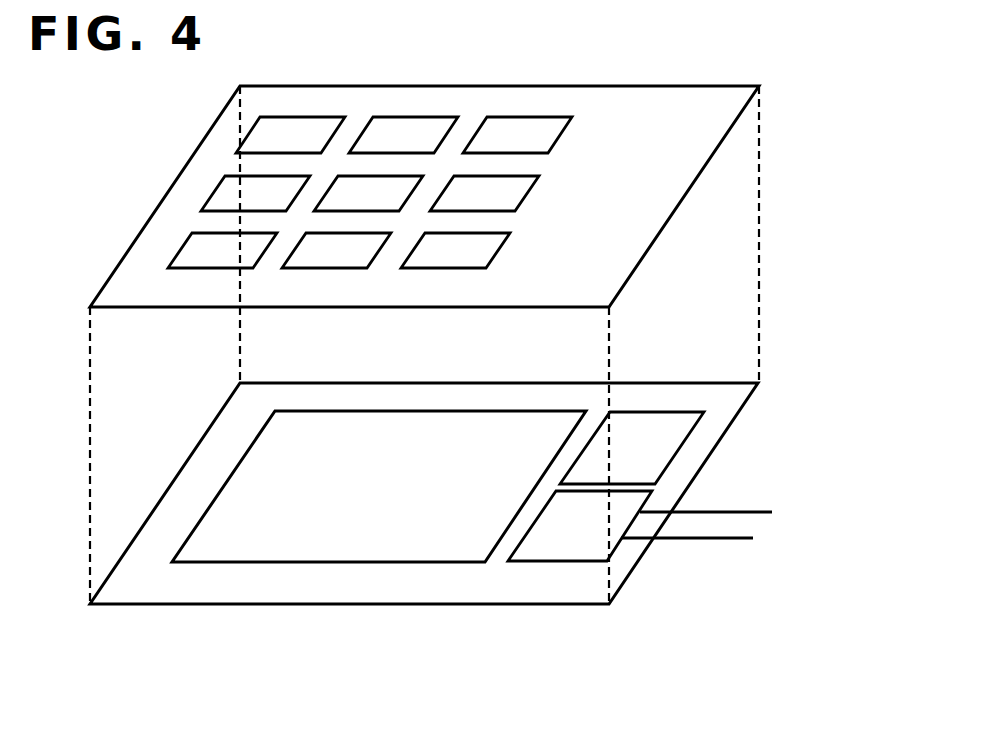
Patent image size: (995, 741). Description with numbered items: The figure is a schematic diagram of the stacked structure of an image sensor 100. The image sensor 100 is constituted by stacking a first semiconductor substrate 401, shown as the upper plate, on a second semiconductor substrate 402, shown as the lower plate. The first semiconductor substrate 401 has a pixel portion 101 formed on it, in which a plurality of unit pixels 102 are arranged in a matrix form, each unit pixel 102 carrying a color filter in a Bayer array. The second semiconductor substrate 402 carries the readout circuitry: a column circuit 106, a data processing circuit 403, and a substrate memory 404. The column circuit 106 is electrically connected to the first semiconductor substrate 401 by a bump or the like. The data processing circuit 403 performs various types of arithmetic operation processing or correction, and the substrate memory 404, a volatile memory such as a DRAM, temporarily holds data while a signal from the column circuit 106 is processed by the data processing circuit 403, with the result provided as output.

The image sensor 100 is at (783, 88).
The pixel portion 101 is at (173, 182).
The unit pixel 102 is at (288, 117).
The column circuit 106 is at (246, 452).
The first semiconductor substrate 401 is at (668, 105).
The second semiconductor substrate 402 is at (665, 395).
The data processing circuit 403 is at (567, 525).
The substrate memory 404 is at (642, 450).